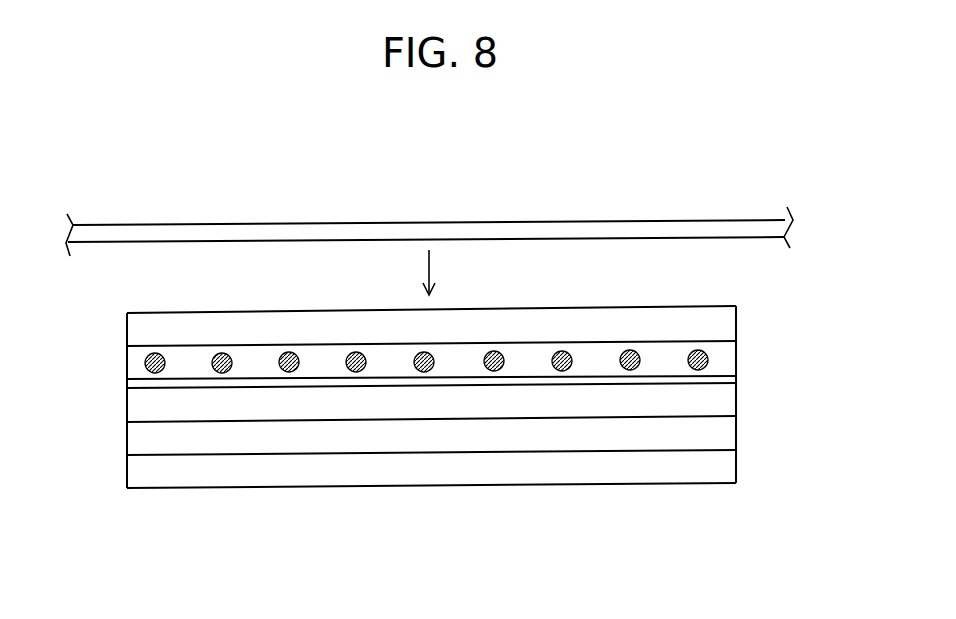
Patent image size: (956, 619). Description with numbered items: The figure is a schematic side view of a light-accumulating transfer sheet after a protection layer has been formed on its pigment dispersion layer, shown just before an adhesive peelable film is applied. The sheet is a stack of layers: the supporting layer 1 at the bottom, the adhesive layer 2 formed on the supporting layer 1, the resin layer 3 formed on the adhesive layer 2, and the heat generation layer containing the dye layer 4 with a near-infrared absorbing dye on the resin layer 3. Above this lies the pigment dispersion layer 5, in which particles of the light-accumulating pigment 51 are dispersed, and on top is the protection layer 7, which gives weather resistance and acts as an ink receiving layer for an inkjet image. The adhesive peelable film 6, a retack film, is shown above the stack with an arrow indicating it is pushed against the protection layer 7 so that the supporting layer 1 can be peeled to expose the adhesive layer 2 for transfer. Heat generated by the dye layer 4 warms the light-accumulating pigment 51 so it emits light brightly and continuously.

The supporting layer 1 is at (722, 467).
The adhesive layer 2 is at (722, 429).
The resin layer 3 is at (722, 401).
The dye layer 4 is at (665, 379).
The pigment dispersion layer 5 is at (431, 454).
The light-accumulating pigment 51 is at (357, 370).
The adhesive peelable film 6 is at (479, 230).
The protection layer 7 is at (722, 326).